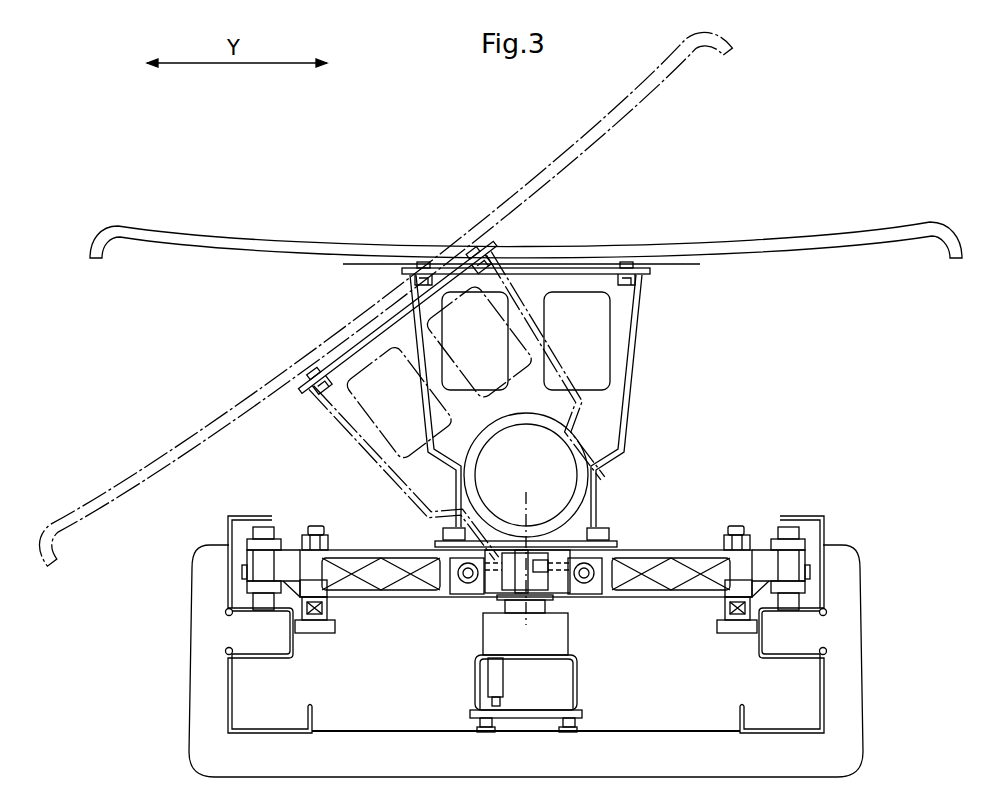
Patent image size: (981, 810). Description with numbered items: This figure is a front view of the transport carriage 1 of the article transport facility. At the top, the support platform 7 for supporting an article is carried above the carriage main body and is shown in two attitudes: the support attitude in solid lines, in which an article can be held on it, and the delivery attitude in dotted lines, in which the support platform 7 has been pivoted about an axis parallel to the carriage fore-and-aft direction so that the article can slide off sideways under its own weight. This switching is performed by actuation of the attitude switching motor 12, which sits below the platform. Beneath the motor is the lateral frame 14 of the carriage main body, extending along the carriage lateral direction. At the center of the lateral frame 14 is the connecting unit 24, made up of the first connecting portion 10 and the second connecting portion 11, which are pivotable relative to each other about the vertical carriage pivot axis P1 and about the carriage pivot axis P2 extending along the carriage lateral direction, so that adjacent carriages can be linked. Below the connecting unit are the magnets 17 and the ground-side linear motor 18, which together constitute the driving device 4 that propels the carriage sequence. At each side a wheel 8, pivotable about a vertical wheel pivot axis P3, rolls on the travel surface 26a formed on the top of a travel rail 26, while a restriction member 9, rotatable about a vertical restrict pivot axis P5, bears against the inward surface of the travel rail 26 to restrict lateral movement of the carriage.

The transport carriage 1 is at (863, 156).
The support platform 7 is at (273, 244).
The wheel 8 is at (250, 603).
The restriction member 9 is at (320, 630).
The first connecting portion 10 is at (505, 575).
The second connecting portion 11 is at (533, 553).
The connecting unit 24 is at (551, 582).
The attitude switching motor 12 is at (565, 456).
The lateral frame 14 is at (390, 548).
The magnet 17 is at (548, 604).
The linear motor 18 is at (560, 636).
The driving device 4 is at (563, 663).
The travel rail 26 is at (226, 528).
The travel surface 26a is at (240, 606).
The carriage pivot axis P1 is at (526, 548).
The carriage pivot axis P2 is at (442, 582).
The wheel pivot axis P3 is at (263, 625).
The restrict pivot axis P5 is at (315, 650).